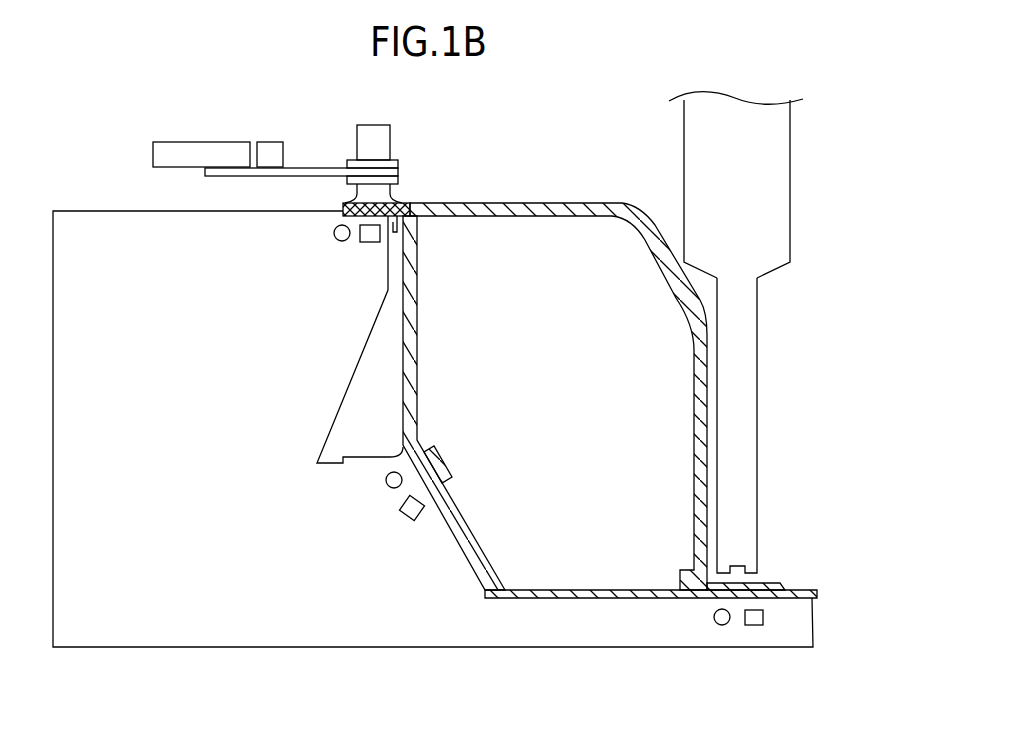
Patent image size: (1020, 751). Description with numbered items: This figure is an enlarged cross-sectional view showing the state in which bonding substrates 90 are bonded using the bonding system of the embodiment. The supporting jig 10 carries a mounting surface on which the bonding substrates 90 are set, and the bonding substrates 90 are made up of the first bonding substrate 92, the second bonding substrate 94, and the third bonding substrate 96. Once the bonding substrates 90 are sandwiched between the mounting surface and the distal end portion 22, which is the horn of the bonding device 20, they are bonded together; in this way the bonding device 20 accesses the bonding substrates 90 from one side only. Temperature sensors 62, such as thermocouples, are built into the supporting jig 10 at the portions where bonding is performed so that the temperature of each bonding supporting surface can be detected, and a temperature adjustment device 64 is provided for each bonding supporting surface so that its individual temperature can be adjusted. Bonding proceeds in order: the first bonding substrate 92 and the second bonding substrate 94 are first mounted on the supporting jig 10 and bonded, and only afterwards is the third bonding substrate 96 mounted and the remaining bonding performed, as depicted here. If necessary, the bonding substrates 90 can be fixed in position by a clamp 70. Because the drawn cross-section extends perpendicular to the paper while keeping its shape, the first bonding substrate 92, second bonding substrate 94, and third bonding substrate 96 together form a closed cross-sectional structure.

The supporting jig 10 is at (121, 210).
The bonding device 20 is at (795, 151).
The distal end portion 22 is at (760, 512).
The temperature sensor 62 is at (369, 243).
The temperature adjustment device 64 is at (335, 238).
The clamp 70 is at (393, 147).
The bonding substrates 90 is at (610, 371).
The first bonding substrate 92 is at (541, 589).
The second bonding substrate 94 is at (419, 330).
The third bonding substrate 96 is at (571, 202).